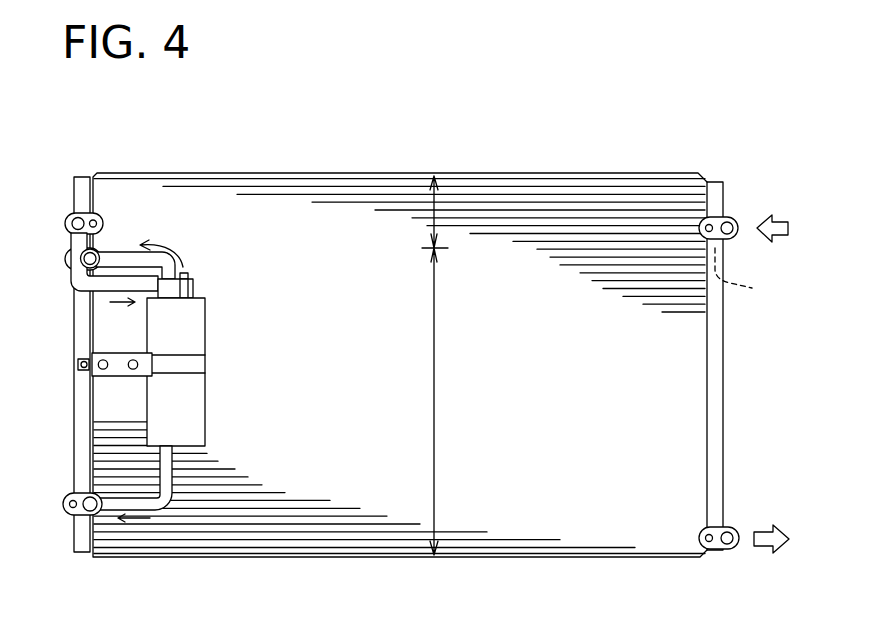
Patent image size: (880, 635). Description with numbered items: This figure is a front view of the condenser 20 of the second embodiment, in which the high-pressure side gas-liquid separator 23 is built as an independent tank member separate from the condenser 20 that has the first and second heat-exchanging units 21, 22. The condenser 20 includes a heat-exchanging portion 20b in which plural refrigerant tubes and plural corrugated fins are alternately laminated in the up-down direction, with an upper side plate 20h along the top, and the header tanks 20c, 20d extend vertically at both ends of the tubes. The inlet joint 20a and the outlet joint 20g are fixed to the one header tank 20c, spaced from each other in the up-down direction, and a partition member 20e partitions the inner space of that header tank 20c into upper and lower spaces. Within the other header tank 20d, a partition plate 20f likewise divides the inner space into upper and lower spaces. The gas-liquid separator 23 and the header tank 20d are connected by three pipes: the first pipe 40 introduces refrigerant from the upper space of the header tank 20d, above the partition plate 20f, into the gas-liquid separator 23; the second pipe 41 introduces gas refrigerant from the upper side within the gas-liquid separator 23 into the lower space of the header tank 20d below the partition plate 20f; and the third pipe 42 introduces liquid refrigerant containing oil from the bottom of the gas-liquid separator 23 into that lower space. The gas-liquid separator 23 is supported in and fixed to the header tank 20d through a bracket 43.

The condenser 20 is at (499, 154).
The inlet joint 20a is at (732, 217).
The heat-exchanging portion 20b is at (357, 462).
The header tank 20c is at (724, 342).
The header tank 20d is at (74, 418).
The partition member 20e is at (758, 274).
The partition plate 20f is at (66, 242).
The outlet joint 20g is at (735, 550).
The upper side plate 20h is at (362, 173).
The first heat-exchanging unit 21 is at (433, 226).
The second heat-exchanging unit 22 is at (433, 340).
The gas-liquid separator 23 is at (206, 400).
The first pipe 40 is at (99, 292).
The second pipe 41 is at (118, 258).
The third pipe 42 is at (172, 488).
The bracket 43 is at (120, 375).